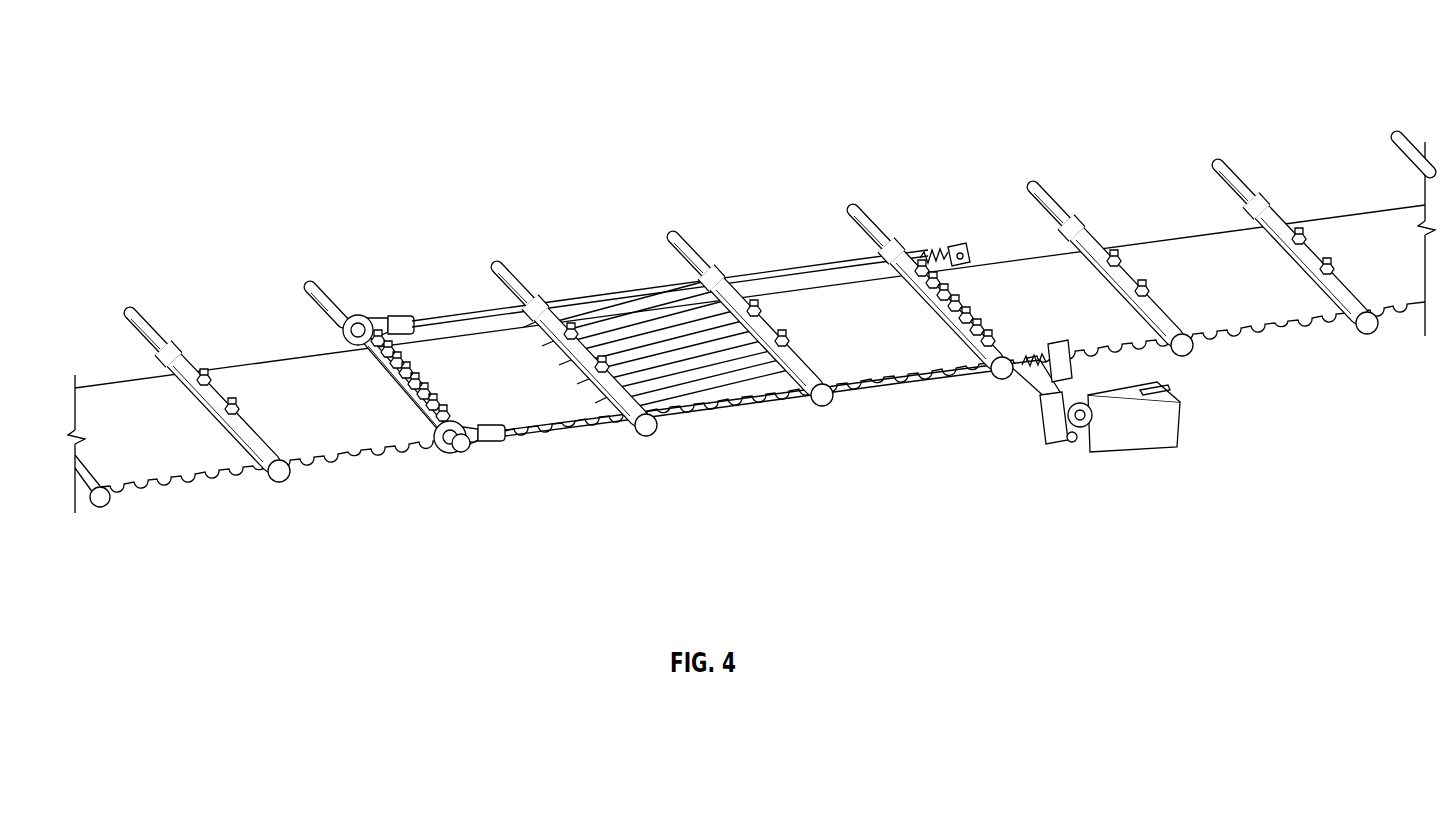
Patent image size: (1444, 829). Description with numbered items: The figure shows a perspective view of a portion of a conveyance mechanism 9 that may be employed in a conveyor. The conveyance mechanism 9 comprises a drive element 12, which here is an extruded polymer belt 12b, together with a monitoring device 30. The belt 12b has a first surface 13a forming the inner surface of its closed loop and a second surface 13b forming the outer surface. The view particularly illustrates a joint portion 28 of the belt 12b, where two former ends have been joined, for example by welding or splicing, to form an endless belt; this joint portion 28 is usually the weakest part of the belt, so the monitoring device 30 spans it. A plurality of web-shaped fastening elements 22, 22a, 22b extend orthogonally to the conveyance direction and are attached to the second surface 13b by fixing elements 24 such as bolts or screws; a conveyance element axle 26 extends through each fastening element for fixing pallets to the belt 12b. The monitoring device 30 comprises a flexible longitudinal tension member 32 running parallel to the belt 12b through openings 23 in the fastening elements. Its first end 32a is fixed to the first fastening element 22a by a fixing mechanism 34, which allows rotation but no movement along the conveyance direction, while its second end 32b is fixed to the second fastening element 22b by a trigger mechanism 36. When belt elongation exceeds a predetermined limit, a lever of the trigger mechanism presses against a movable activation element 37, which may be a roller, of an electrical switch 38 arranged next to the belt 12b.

The conveyance mechanism 9 is at (587, 136).
The drive element 12 is at (751, 342).
The belt 12b is at (751, 342).
The first surface 13a is at (368, 481).
The second surface 13b is at (290, 365).
The fastening element 22 is at (545, 320).
The first fastening element 22a is at (432, 428).
The second fastening element 22b is at (920, 300).
The opening 23 is at (630, 440).
The fixing element 24 is at (213, 383).
The conveyance element axle 26 is at (150, 330).
The joint portion 28 is at (725, 432).
The monitoring device 30 is at (724, 336).
The longitudinal tension member 32 is at (618, 300).
The first end 32a is at (408, 320).
The second end 32b is at (973, 228).
The fixing mechanism 34 is at (380, 322).
The trigger mechanism 36 is at (935, 225).
The movable activation element 37 is at (1085, 408).
The electrical switch 38 is at (1122, 462).